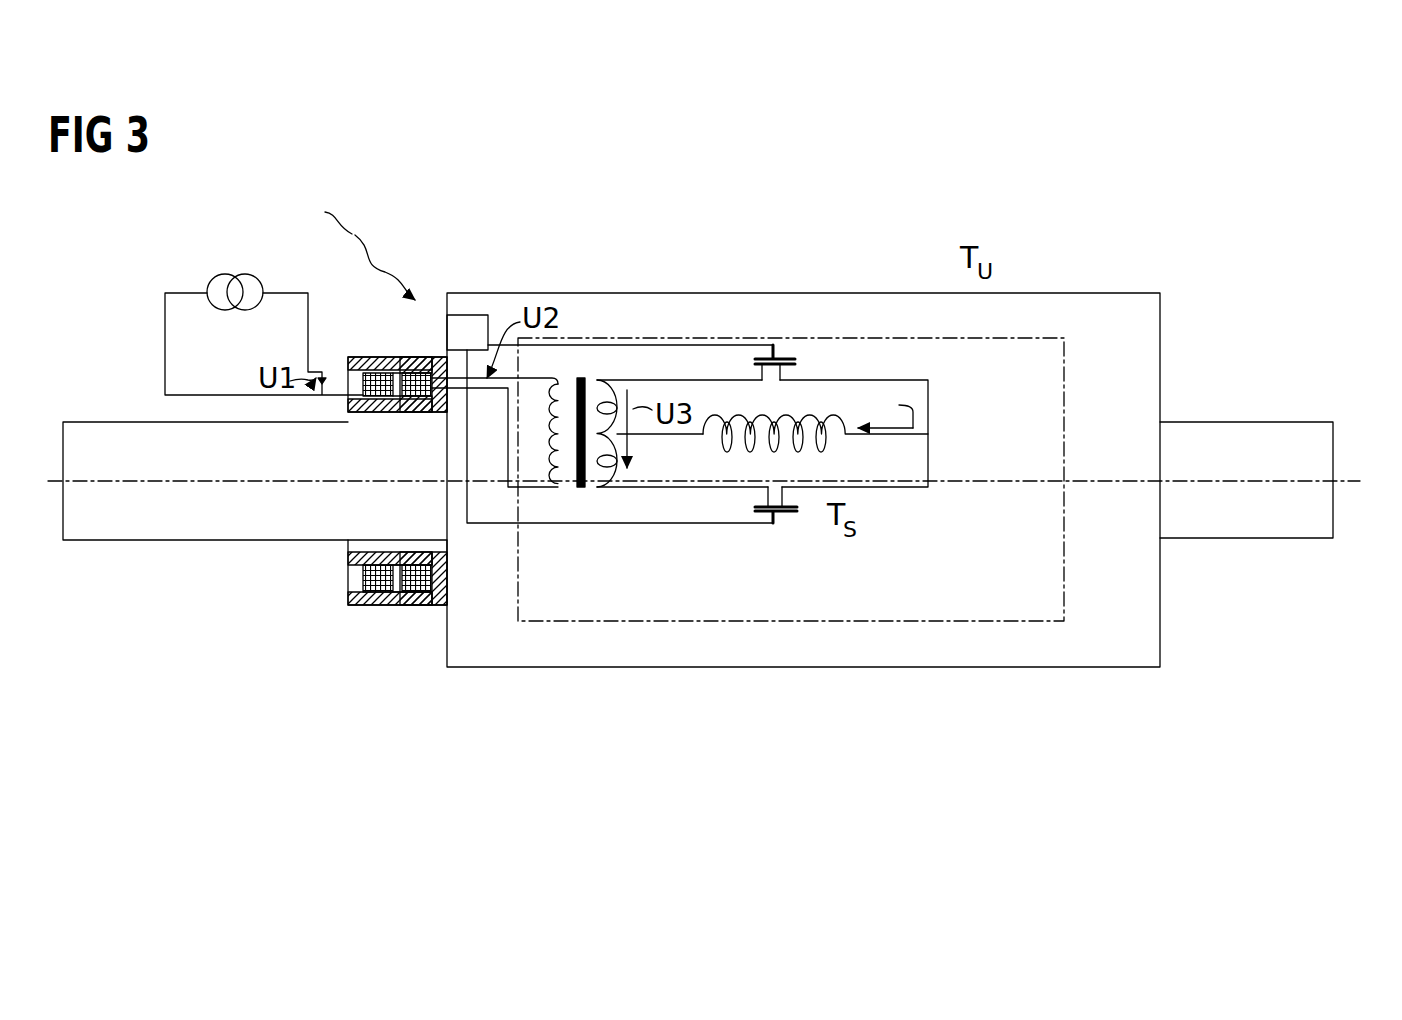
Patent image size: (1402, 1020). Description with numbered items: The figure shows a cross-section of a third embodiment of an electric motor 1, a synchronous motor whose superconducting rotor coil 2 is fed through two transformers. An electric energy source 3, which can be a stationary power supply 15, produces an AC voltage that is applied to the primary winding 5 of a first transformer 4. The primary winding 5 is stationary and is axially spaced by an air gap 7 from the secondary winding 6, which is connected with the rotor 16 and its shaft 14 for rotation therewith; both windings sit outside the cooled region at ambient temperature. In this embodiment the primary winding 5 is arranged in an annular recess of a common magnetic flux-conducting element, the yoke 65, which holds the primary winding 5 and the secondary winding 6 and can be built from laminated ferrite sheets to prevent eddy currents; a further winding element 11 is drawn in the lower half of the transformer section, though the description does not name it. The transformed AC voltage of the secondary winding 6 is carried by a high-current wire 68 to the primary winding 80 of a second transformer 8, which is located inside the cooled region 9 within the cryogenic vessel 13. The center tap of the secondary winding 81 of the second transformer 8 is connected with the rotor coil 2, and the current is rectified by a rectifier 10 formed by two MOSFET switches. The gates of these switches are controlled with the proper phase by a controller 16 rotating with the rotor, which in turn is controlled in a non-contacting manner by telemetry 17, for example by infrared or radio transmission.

The electric motor 1 is at (790, 214).
The superconducting rotor coil 2 is at (805, 397).
The electric energy source 3 is at (223, 275).
The first transformer 4 is at (394, 336).
The primary winding 5 is at (377, 606).
The secondary winding 6 is at (419, 356).
The air gap 7 is at (387, 357).
The second transformer 8 is at (578, 376).
The cooled region 9 is at (965, 591).
The rectifier 10 is at (787, 343).
The coil 11 is at (356, 578).
The cryogenic vessel 13 is at (713, 668).
The shaft 14 is at (150, 512).
The stationary power supply 15 is at (242, 367).
The controller 16 is at (469, 328).
The telemetry 17 is at (355, 235).
The magnetic flux-conducting element (yoke) 65 is at (357, 606).
The high-current wire 68 is at (505, 447).
The primary winding 80 is at (565, 474).
The secondary winding 81 is at (607, 471).